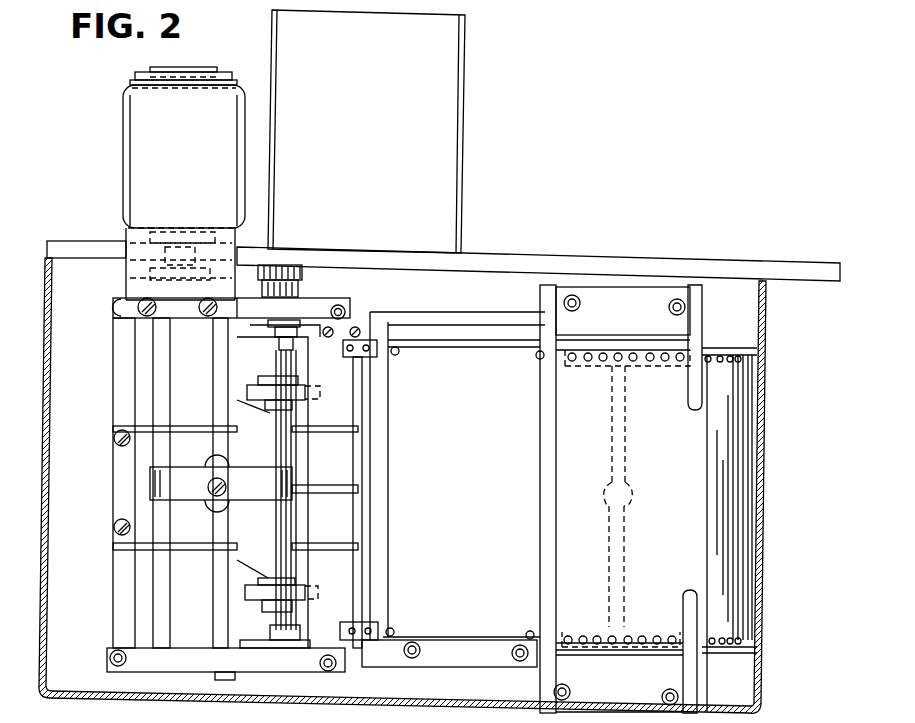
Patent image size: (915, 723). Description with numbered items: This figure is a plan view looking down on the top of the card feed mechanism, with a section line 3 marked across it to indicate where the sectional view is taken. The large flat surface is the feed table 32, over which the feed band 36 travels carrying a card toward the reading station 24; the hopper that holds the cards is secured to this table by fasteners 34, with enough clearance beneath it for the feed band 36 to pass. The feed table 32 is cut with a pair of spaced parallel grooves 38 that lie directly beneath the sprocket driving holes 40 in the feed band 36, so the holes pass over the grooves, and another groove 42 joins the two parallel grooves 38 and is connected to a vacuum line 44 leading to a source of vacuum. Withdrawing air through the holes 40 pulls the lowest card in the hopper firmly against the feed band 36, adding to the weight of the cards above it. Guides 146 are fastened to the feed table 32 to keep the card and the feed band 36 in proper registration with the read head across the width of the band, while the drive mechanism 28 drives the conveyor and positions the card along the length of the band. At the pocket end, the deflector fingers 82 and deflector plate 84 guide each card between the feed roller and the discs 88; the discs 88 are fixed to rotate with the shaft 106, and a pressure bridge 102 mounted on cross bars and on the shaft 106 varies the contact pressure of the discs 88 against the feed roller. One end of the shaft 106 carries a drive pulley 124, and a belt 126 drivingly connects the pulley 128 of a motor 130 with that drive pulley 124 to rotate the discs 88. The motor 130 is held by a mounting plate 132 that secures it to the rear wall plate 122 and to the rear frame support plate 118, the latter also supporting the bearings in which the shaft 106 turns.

The section line 3- 3 is at (72, 480).
The reading station 24 is at (527, 456).
The drive mechanism 28 is at (466, 131).
The feed table 32 is at (500, 283).
The fasteners 34 is at (571, 692).
The feed band 36 is at (372, 632).
The parallel grooves 38 is at (595, 380).
The sprocket driving holes 40 is at (660, 367).
The groove 42 is at (620, 453).
The vacuum line 44 is at (628, 503).
The deflector fingers 82 is at (312, 432).
The deflector plate 84 is at (346, 390).
The discs 88 is at (248, 590).
The pressure bridge 102 is at (201, 500).
The shaft 106 is at (282, 352).
The rear frame support plate 118 is at (352, 303).
The rear wall plate 122 is at (86, 238).
The drive pulley 124 is at (302, 290).
The belt 126 is at (250, 277).
The pulley 128 is at (125, 284).
The motor 130 is at (126, 111).
The mounting plate 132 is at (128, 230).
The guides 146 is at (433, 668).